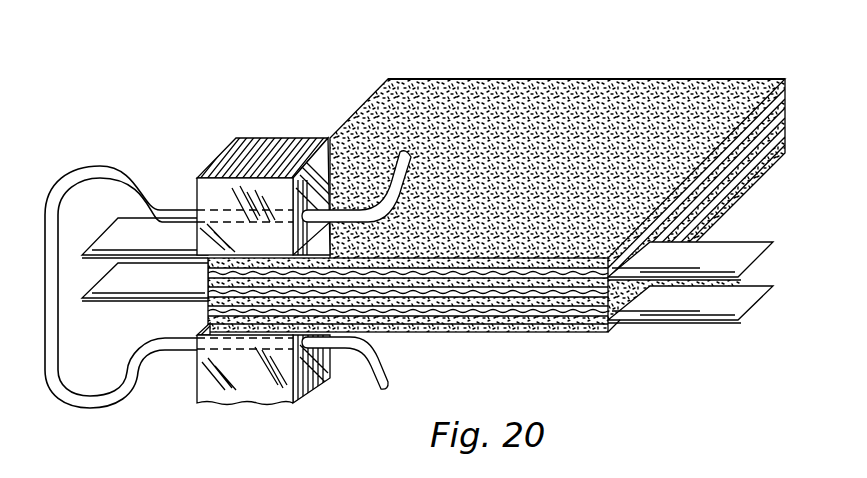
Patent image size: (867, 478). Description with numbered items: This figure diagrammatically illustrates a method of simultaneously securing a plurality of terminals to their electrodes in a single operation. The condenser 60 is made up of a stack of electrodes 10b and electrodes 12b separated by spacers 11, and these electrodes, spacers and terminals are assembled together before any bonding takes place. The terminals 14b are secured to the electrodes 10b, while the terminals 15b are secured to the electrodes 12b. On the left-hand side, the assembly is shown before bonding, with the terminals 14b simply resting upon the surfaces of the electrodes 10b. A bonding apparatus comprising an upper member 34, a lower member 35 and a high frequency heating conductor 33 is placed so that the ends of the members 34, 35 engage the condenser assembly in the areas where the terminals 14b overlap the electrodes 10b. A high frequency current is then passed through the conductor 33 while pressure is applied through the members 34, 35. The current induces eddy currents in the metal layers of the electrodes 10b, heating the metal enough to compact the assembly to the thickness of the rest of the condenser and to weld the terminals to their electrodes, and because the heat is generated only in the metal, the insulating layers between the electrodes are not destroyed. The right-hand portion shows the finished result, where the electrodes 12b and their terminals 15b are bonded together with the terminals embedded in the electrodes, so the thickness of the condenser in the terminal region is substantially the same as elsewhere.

The condenser 60 is at (636, 74).
The spacers 11 is at (787, 95).
The terminals 15b is at (690, 287).
The terminals 14b is at (145, 259).
The electrodes 10b is at (208, 309).
The electrodes 12b is at (404, 268).
The high frequency heating conductor 33 is at (178, 344).
The pressure member 34 is at (210, 207).
The pressure member 35 is at (262, 378).